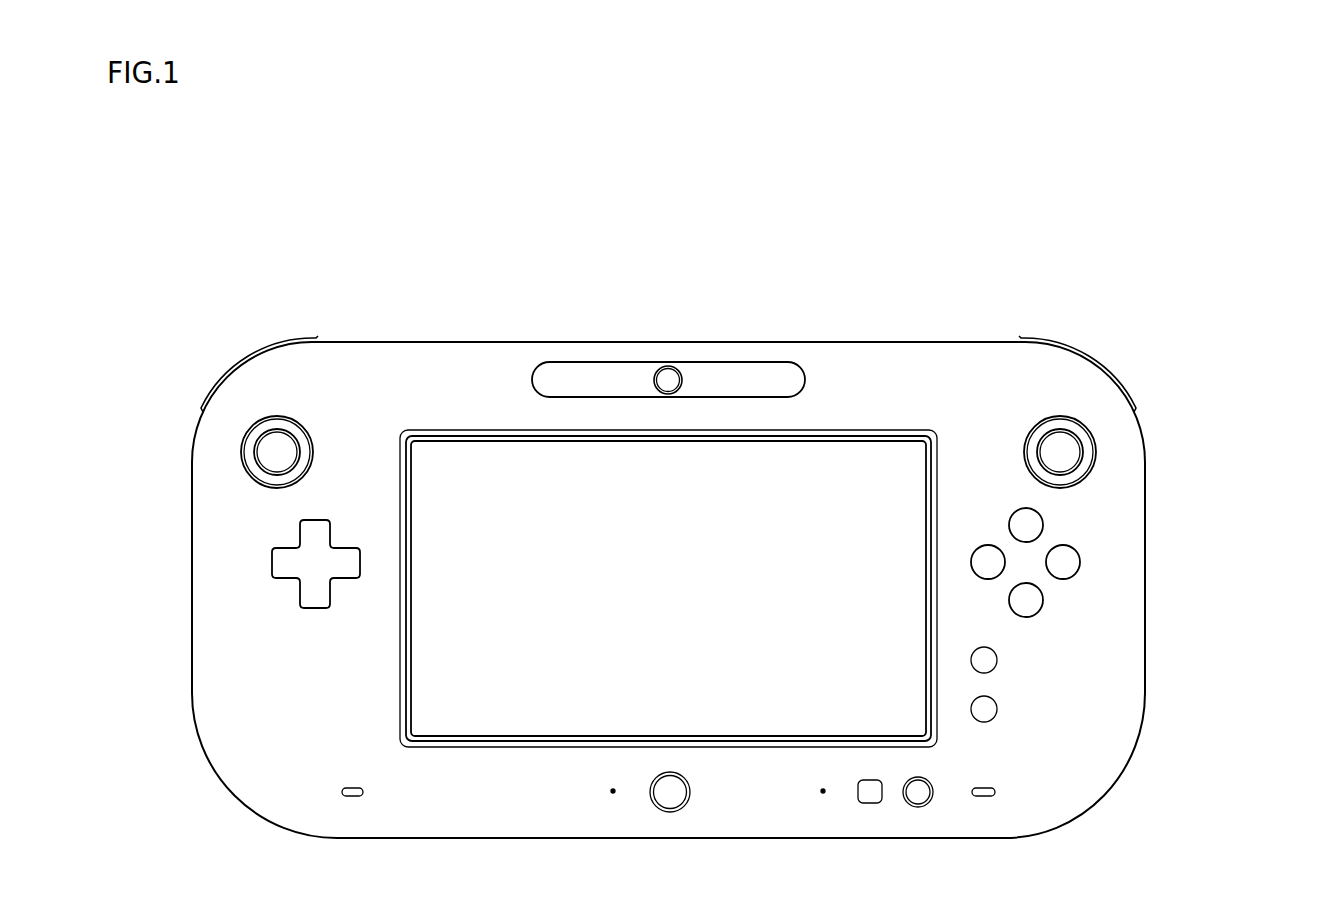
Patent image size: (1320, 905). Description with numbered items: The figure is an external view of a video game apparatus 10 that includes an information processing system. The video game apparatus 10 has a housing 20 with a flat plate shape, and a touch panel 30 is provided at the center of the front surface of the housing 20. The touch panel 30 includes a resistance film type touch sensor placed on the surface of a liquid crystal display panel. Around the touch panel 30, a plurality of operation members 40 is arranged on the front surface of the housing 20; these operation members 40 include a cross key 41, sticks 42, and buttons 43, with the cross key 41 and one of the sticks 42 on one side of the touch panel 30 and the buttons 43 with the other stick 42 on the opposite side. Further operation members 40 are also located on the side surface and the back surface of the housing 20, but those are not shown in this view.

The video game apparatus 10 is at (955, 276).
The housing 20 is at (668, 342).
The touch panel 30 is at (497, 440).
The operation members 40 is at (668, 524).
The cross key 41 is at (272, 562).
The sticks 42 is at (241, 452).
The buttons 43 is at (988, 545).